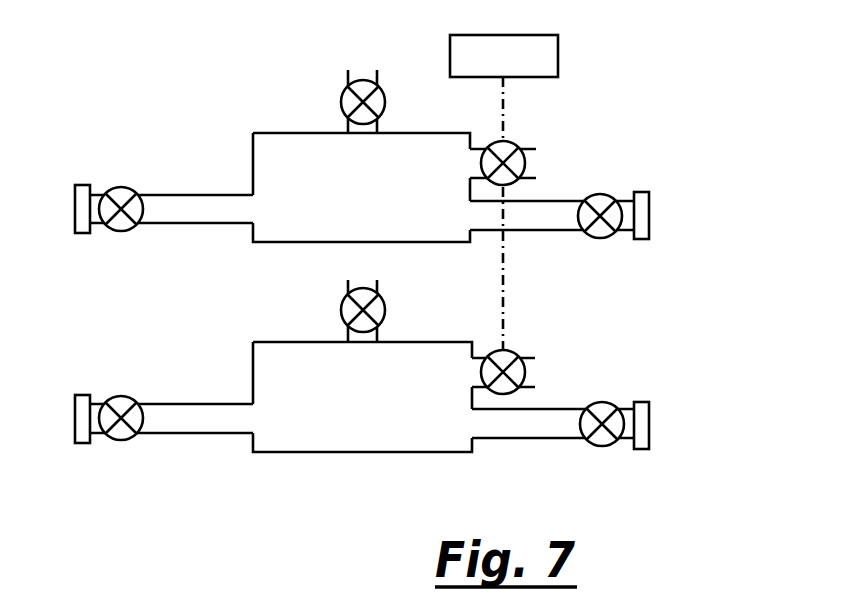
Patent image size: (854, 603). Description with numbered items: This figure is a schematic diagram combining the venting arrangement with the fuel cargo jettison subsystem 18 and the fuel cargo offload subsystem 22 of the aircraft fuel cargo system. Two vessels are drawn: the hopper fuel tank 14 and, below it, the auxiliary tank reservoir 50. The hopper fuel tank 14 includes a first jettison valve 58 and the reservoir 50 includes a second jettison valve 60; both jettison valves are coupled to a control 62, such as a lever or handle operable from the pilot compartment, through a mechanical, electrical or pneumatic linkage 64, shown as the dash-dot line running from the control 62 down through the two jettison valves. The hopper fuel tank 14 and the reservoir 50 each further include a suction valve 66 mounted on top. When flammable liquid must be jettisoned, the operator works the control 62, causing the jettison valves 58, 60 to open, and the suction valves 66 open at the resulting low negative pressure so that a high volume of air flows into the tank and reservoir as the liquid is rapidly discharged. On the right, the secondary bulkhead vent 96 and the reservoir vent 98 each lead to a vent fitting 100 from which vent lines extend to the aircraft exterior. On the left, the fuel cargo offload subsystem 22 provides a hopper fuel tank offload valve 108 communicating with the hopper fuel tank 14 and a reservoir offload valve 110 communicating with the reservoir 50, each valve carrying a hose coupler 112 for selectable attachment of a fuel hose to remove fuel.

The hopper fuel tank 14 is at (253, 163).
The fuel cargo jettison subsystem 18 is at (650, 123).
The fuel cargo offload subsystem 22 is at (718, 418).
The reservoir 50 is at (253, 364).
The first jettison valve 58 is at (510, 142).
The second jettison valve 60 is at (512, 352).
The control 62 is at (560, 43).
The linkage 64 is at (506, 276).
The suction valve 66 is at (341, 105).
The secondary bulkhead vent 96 is at (604, 194).
The reservoir vent 98 is at (605, 402).
The vent fitting 100 is at (643, 240).
The hopper fuel tank offload valve 108 is at (119, 186).
The reservoir offload valve 110 is at (119, 396).
The hose coupler 112 is at (79, 234).